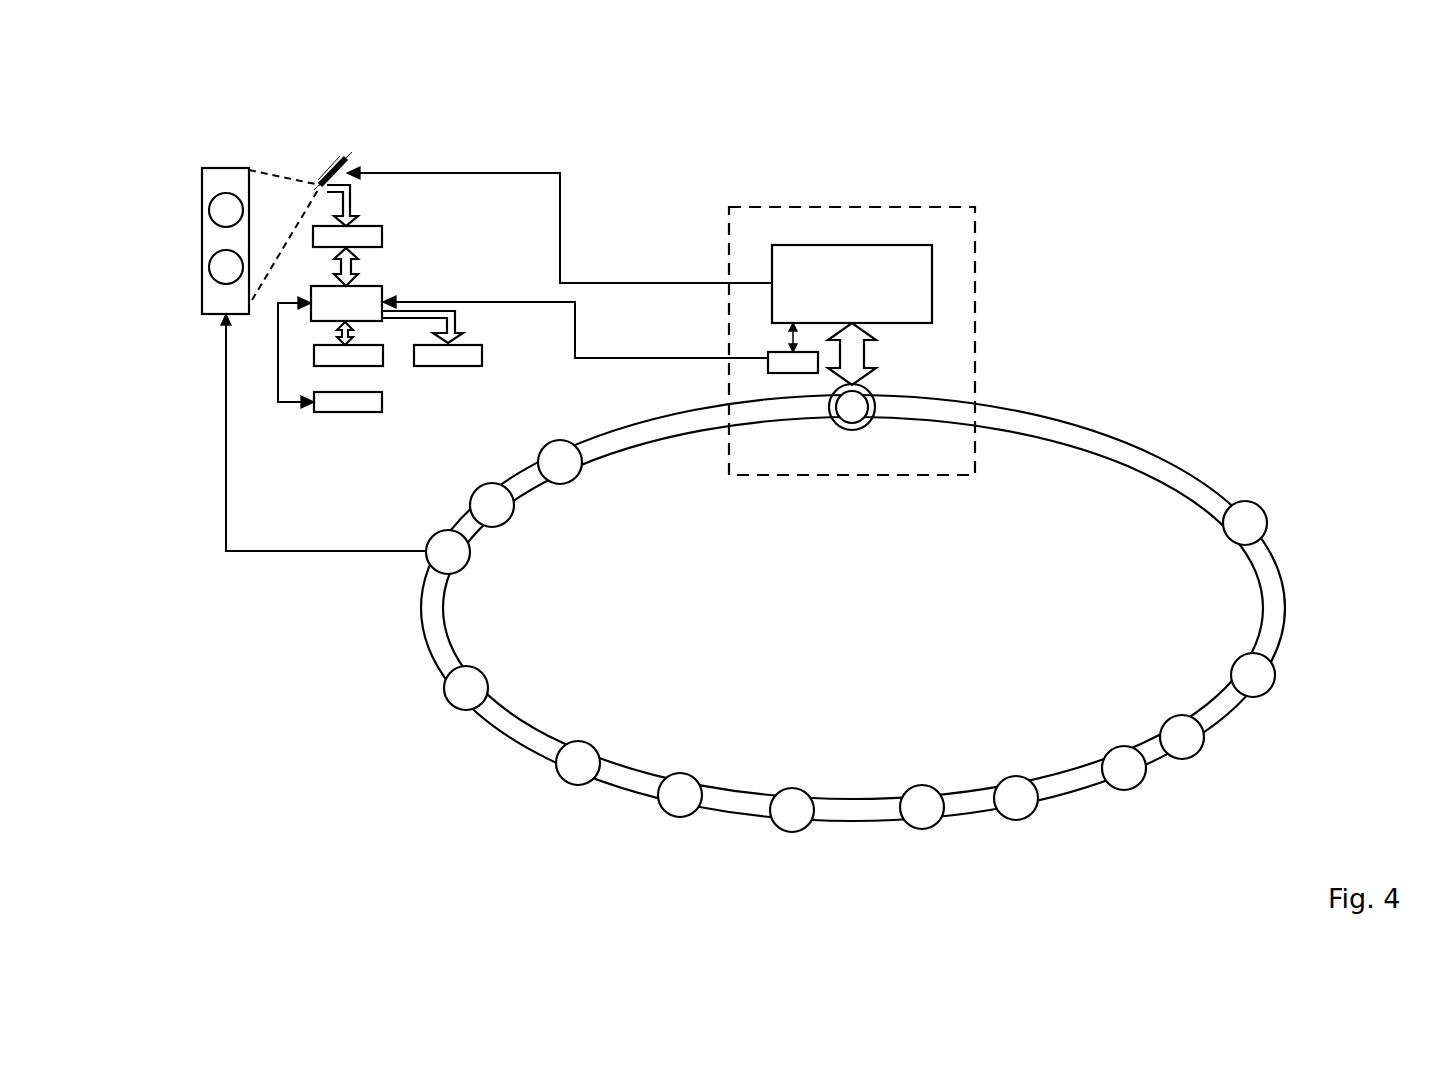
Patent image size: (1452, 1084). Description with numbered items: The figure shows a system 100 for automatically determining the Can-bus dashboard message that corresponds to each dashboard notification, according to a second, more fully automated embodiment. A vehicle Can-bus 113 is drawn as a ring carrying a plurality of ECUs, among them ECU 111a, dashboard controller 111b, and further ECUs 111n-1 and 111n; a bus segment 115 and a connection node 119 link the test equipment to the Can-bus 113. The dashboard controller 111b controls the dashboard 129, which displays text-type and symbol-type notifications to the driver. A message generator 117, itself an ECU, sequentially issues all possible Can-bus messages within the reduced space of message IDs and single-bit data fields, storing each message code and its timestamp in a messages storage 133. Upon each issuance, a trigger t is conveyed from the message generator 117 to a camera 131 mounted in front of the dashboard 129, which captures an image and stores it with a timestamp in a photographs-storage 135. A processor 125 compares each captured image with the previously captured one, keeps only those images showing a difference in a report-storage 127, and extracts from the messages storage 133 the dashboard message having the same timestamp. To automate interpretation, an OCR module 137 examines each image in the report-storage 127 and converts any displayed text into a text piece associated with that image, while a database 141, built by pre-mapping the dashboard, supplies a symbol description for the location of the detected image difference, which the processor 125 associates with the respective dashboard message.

The system 100 is at (1095, 392).
The Can-bus 113 is at (1143, 452).
The track section 115 is at (975, 382).
The ECU 111a is at (490, 503).
The dashboard controller 111b is at (440, 550).
The ECU 111n is at (1247, 523).
The ECU 111n-1 is at (1252, 675).
The message generator 117 is at (907, 262).
The control node 119 is at (857, 402).
The messages storage 133 is at (777, 362).
The dashboard 129 is at (200, 175).
The camera 131 is at (350, 158).
The trigger t is at (585, 180).
The photographs-storage 135 is at (383, 236).
The processor 125 is at (385, 286).
The OCR module 137 is at (383, 361).
The report-storage 127 is at (482, 358).
The database 141 is at (345, 413).